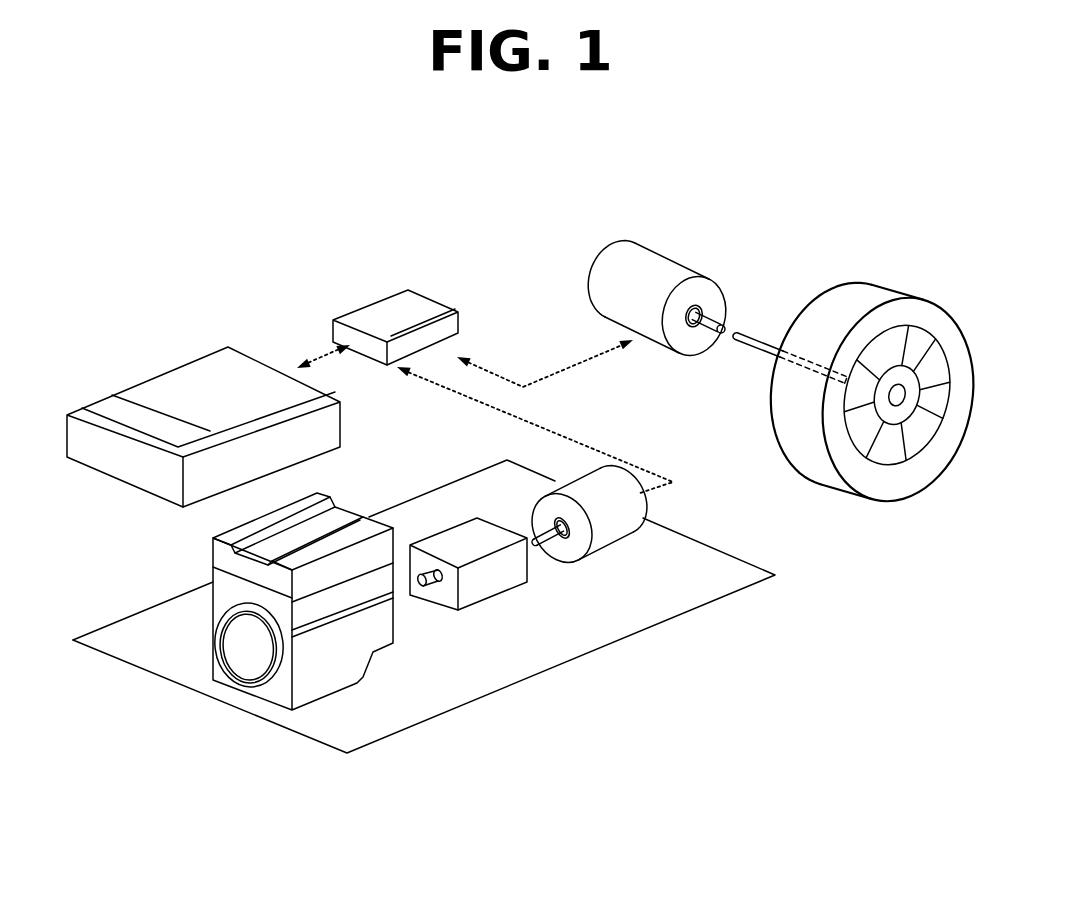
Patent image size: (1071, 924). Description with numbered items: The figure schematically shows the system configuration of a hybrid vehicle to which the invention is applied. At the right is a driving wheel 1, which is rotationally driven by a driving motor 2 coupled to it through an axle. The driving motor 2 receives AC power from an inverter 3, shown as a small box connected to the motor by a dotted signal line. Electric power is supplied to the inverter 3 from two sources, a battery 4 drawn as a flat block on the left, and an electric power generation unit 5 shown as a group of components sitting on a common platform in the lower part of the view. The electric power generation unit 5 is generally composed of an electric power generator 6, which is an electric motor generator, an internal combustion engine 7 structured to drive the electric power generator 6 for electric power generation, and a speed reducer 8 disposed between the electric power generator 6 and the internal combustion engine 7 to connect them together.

The driving wheel 1 is at (870, 300).
The driving motor 2 is at (655, 270).
The inverter 3 is at (385, 305).
The battery 4 is at (200, 378).
The electric power generation unit 5 is at (128, 683).
The electric power generator 6 is at (615, 530).
The internal combustion engine 7 is at (332, 673).
The speed reducer 8 is at (495, 580).